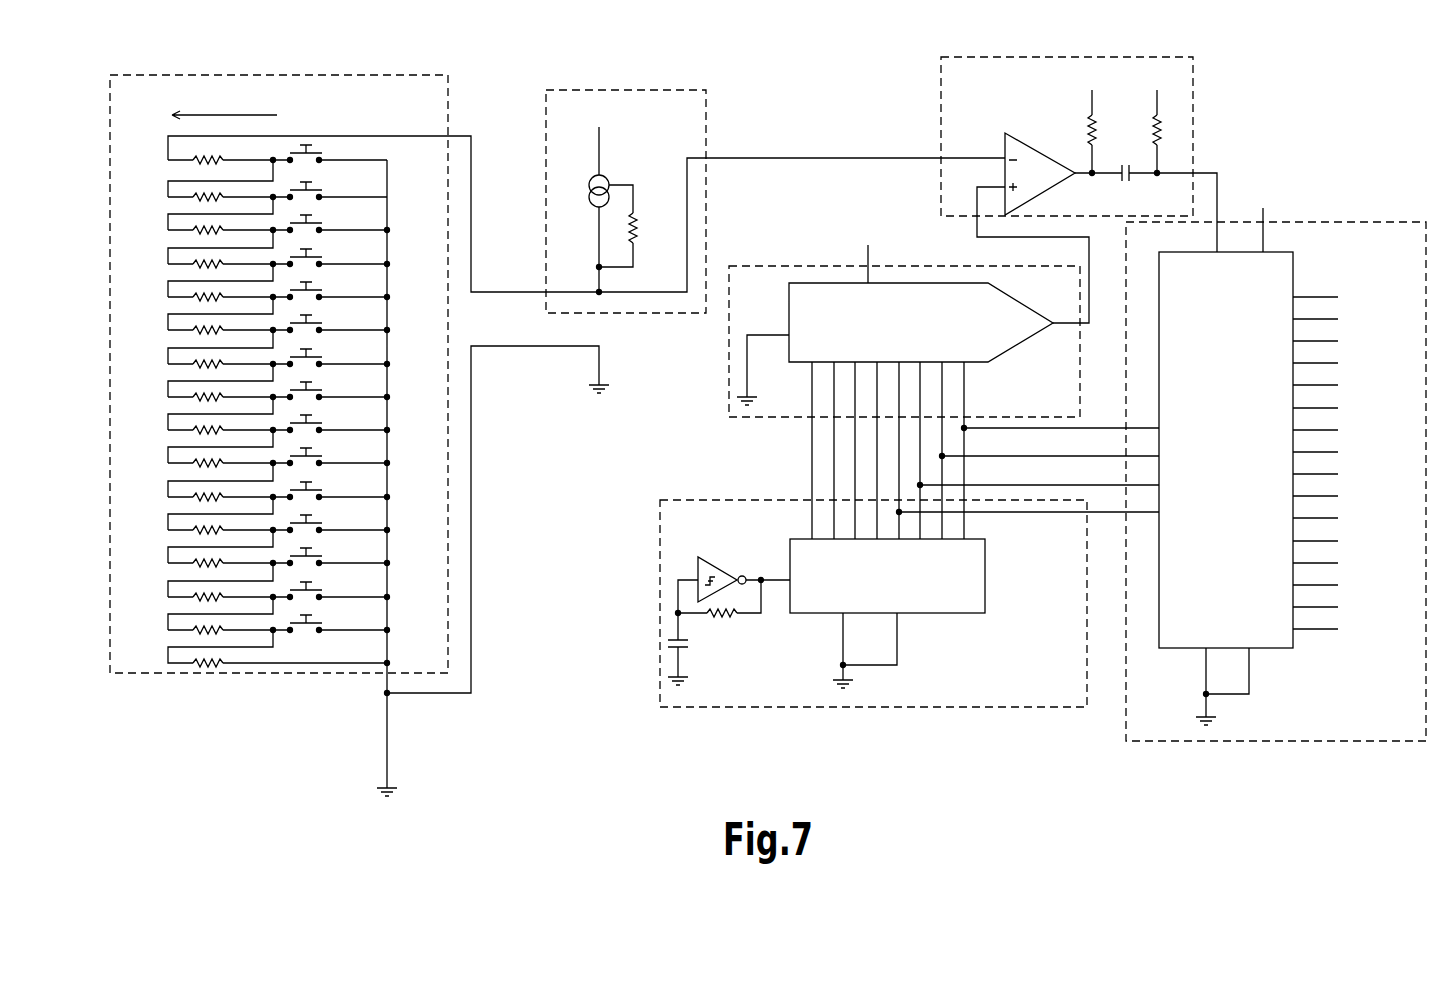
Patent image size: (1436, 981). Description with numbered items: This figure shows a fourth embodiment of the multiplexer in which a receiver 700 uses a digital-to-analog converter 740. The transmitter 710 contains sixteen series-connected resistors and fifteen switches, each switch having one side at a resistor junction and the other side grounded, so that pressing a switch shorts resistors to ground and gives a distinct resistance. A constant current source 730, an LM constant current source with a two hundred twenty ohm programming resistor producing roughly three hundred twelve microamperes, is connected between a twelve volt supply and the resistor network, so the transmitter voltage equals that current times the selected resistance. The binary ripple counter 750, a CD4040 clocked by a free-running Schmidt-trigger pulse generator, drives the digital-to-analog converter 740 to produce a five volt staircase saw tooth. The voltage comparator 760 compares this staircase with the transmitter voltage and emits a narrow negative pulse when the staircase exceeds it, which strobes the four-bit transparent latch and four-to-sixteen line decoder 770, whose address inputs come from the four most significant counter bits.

The receiver 700 is at (885, 718).
The transmitter 710 is at (300, 92).
The constant current source 730 is at (566, 140).
The digital-to-analog converter 740 is at (767, 293).
The binary ripple counter 750 is at (700, 525).
The voltage comparator 760 is at (963, 128).
The 4-bit transparent latch/4-to-16 line decoder 770 is at (1303, 237).